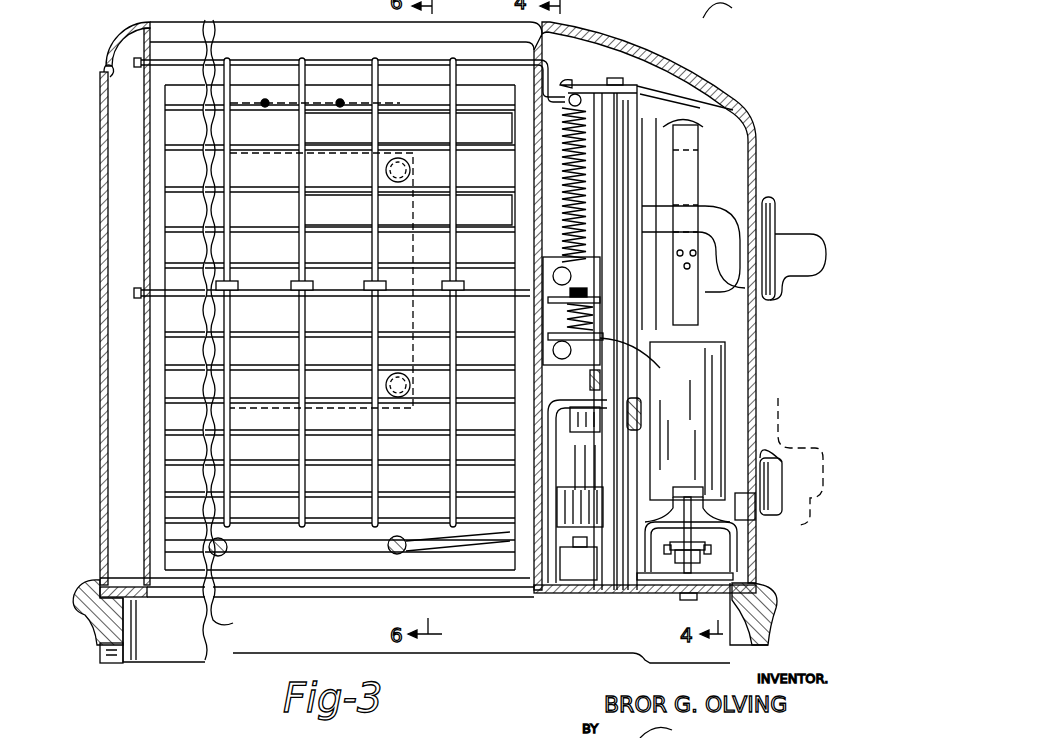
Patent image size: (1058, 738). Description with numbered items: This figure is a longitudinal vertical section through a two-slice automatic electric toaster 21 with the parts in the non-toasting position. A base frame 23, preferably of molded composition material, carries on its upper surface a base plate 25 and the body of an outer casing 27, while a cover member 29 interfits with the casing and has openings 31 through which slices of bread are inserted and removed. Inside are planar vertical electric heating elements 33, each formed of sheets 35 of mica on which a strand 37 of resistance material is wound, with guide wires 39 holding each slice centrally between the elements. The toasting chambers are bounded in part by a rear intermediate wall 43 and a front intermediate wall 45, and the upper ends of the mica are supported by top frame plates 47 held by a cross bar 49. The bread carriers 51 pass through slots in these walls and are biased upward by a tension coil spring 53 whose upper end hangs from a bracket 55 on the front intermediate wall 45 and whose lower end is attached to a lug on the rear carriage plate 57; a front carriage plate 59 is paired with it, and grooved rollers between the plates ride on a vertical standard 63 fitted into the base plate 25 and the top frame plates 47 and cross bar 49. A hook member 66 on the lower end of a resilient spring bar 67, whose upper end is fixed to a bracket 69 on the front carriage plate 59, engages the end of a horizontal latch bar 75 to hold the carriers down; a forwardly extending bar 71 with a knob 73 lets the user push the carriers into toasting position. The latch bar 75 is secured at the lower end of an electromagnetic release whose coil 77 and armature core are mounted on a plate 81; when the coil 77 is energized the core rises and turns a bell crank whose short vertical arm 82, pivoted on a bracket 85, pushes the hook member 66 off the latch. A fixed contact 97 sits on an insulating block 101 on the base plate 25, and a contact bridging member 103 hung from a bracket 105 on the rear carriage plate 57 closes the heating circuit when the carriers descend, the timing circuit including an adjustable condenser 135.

The automatic electric toaster 21 is at (812, 140).
The base frame 23 is at (97, 640).
The base plate 25 is at (145, 595).
The outer casing 27 is at (102, 405).
The cover member 29 is at (120, 30).
The openings 31 is at (176, 30).
The electric heating elements 33 is at (356, 222).
The sheets of electric-insulating material 35 is at (513, 125).
The strip or strand of resistance material 37 is at (482, 190).
The guard or guide wires 39 is at (447, 121).
The rear intermediate wall 43 is at (146, 172).
The front intermediate wall 45 is at (533, 240).
The top frame plates 47 is at (556, 97).
The cross bar 49 is at (632, 84).
The bread carriers 51 is at (522, 340).
The tension coil spring 53 is at (555, 151).
The bracket 55 is at (576, 95).
The rear carriage plate 57 is at (590, 377).
The front carriage plate 59 is at (637, 370).
The standard 63 is at (637, 108).
The hook member 66 is at (700, 303).
The resilient spring bar 67 is at (698, 168).
The bracket 69 is at (731, 158).
The forwardly extending bar 71 is at (722, 198).
The knob 73 is at (780, 240).
The latch bar 75 is at (688, 490).
The coil 77 is at (728, 364).
The plate 81 is at (727, 574).
The short vertical arm 82 is at (694, 527).
The bracket 85 is at (694, 538).
The fixed contact 97 is at (577, 552).
The block of electric-insulating material 101 is at (586, 578).
The contact bridging member 103 is at (641, 357).
The bracket 105 is at (552, 308).
The adjustable condenser 135 is at (572, 448).